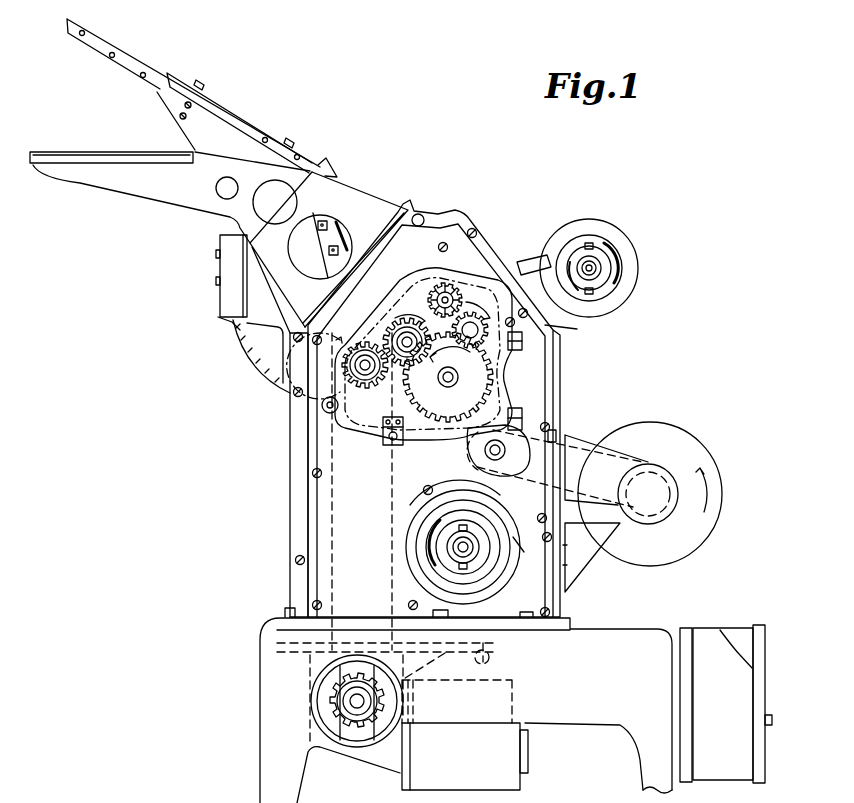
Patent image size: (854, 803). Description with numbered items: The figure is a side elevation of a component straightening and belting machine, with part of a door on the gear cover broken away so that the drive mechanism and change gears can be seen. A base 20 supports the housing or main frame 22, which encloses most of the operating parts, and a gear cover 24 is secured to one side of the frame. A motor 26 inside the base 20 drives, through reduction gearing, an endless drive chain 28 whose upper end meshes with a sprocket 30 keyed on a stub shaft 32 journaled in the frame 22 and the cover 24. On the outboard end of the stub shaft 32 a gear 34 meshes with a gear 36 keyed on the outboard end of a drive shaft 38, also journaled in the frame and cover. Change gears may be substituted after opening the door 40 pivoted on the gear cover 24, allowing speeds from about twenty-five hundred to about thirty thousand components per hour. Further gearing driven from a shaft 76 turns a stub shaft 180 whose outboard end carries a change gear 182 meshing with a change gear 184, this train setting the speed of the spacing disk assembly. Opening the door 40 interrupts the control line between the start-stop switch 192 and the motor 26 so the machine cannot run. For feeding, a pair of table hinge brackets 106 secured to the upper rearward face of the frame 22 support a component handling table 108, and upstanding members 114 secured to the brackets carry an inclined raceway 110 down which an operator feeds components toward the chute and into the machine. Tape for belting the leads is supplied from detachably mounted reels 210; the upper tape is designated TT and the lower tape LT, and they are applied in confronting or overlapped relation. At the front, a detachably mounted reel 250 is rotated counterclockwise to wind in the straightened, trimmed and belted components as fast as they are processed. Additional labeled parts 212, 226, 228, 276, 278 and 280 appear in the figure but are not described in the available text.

The base 20 is at (260, 722).
The main frame 22 is at (560, 343).
The gear cover 24 is at (308, 511).
The motor 26 is at (527, 770).
The endless drive chain 28 is at (392, 552).
The sprocket 30 is at (338, 410).
The stub shaft 32 is at (362, 350).
The gear 34 is at (372, 393).
The gear 36 is at (415, 369).
The drive shaft 38 is at (405, 337).
The door 40 is at (362, 447).
The shaft 76 is at (432, 300).
The table hinge brackets 106 is at (172, 207).
The component handling table 108 is at (59, 156).
The inclined raceway 110 is at (228, 114).
The upstanding members 114 is at (176, 124).
The stub shaft 180 is at (458, 411).
The change gear 182 is at (403, 430).
The change gear 184 is at (512, 351).
The start-stop switch 192 is at (219, 271).
The reels 210 is at (638, 268).
The key 212 is at (596, 246).
The bracket 226 is at (588, 569).
The link bar 228 is at (536, 252).
The reel 250 is at (690, 441).
The roller arm 276 is at (585, 445).
The belt 278 is at (568, 473).
The pulley hub 280 is at (506, 457).
The top tape TT is at (572, 333).
The lower tape LT is at (528, 550).